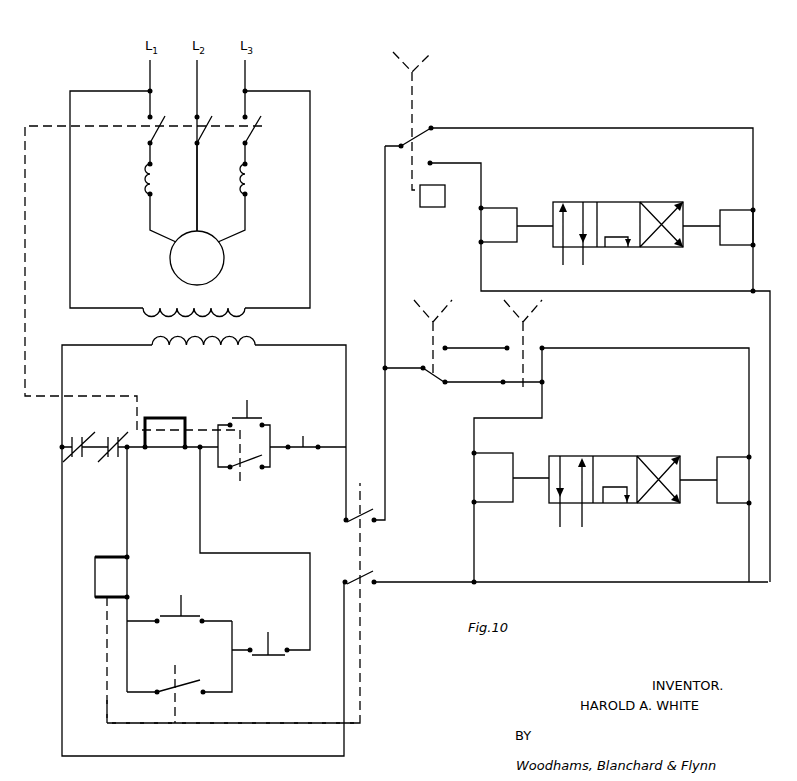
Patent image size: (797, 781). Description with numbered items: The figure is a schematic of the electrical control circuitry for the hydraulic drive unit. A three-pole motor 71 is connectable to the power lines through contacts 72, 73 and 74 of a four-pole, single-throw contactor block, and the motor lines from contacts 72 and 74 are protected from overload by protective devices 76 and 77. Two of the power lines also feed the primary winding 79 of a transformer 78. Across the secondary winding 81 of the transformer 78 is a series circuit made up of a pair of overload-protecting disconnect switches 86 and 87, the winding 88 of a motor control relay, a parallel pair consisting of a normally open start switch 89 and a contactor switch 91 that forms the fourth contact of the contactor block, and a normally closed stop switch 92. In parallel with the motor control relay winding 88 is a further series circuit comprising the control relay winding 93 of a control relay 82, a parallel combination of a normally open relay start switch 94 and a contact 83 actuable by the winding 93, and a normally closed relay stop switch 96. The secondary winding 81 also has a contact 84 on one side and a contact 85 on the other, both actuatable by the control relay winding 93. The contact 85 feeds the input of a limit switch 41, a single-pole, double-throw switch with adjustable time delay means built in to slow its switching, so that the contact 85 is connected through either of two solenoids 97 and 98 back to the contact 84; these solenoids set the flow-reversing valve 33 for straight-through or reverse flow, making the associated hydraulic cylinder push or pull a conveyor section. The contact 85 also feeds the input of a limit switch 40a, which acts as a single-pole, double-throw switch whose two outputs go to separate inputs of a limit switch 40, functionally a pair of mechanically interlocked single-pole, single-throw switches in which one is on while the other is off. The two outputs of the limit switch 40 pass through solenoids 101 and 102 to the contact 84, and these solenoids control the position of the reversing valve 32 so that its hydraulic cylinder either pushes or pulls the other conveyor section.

The three-pole motor 71 is at (213, 257).
The contactor contact 72 is at (158, 132).
The contactor contact 73 is at (205, 132).
The contactor contact 74 is at (262, 124).
The protective device 76 is at (145, 183).
The protective device 77 is at (248, 182).
The transformer 78 is at (250, 323).
The primary winding 79 is at (173, 306).
The secondary winding 81 is at (195, 347).
The control relay 82 is at (258, 719).
The contact 83 is at (190, 688).
The contact 84 is at (364, 586).
The contact 85 is at (364, 524).
The overload-protecting disconnect switch 86 is at (120, 465).
The overload-protecting disconnect switch 87 is at (86, 464).
The motor control relay winding 88 is at (153, 418).
The start switch 89 is at (255, 417).
The contactor switch 91 is at (245, 470).
The stop switch 92 is at (308, 442).
The control relay winding 93 is at (95, 572).
The push button 94 is at (185, 615).
The relay stop switch 96 is at (278, 656).
The solenoid 97 is at (514, 243).
The solenoid 98 is at (740, 247).
The solenoid 101 is at (492, 503).
The solenoid 102 is at (737, 505).
The reversing valve 32 is at (633, 448).
The flow-reversing valve 33 is at (647, 194).
The limit switch 40 is at (512, 387).
The limit switch 40a is at (428, 386).
The limit switch 41 is at (418, 126).